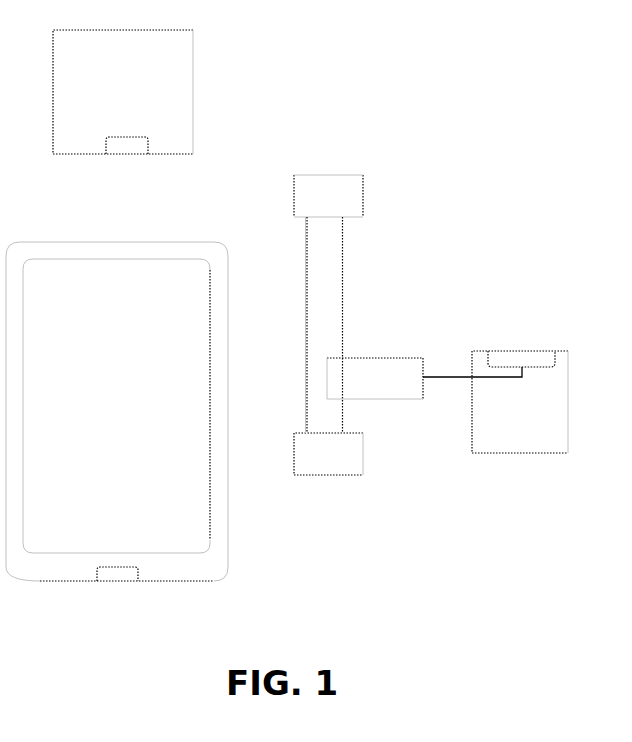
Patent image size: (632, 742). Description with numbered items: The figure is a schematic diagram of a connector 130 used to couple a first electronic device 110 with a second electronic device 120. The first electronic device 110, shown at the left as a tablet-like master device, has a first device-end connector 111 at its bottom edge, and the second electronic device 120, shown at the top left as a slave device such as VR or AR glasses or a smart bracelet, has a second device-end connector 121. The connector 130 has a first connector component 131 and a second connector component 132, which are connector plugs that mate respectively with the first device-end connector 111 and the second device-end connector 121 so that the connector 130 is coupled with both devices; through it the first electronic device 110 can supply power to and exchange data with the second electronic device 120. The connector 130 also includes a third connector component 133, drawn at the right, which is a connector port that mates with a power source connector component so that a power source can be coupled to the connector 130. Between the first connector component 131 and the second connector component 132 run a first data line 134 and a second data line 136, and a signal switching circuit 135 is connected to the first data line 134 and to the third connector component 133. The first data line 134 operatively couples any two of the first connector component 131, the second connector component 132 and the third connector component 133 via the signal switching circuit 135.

The first electronic device 110 is at (131, 318).
The first device-end connector 111 is at (128, 580).
The second electronic device 120 is at (137, 62).
The second device-end connector 121 is at (140, 153).
The connector 130 is at (443, 175).
The first connector component 131 is at (338, 168).
The second connector component 132 is at (343, 479).
The third connector component 133 is at (523, 351).
The first data line 134 is at (345, 273).
The signal switching circuit 135 is at (390, 390).
The second data line 136 is at (303, 325).